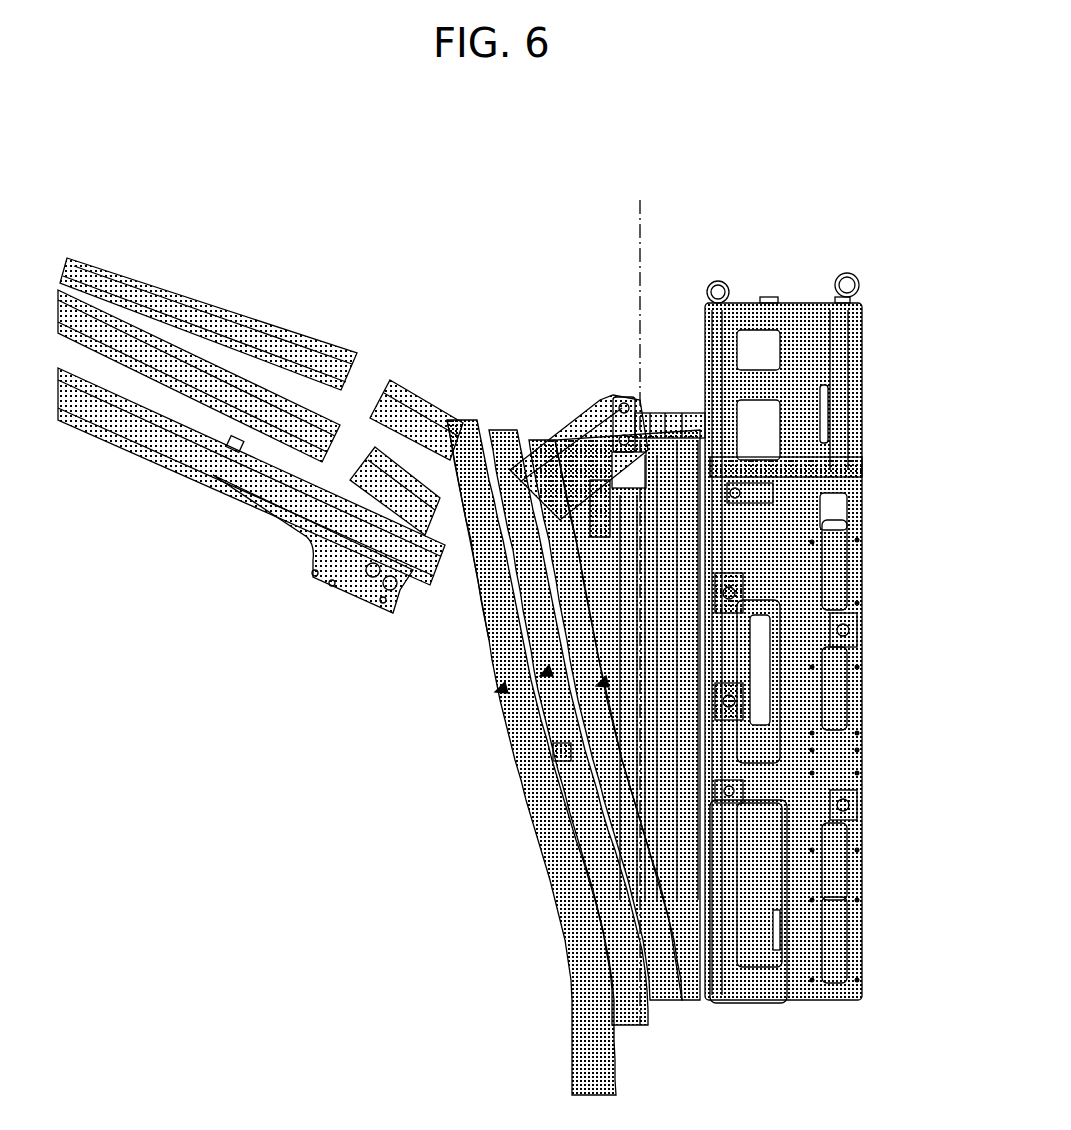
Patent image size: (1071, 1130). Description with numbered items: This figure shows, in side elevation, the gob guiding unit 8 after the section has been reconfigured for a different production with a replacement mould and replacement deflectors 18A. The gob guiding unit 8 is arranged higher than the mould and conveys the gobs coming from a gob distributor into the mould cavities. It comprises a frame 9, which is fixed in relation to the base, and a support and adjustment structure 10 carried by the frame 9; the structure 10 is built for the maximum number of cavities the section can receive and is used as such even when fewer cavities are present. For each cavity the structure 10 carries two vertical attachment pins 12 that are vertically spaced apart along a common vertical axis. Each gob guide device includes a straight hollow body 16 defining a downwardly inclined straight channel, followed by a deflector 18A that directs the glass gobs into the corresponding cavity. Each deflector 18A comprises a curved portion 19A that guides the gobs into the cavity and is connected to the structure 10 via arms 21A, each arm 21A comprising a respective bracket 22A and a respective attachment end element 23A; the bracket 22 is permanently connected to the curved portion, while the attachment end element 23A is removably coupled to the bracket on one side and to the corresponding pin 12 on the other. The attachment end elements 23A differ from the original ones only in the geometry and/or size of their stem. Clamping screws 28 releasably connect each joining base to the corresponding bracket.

The gob guiding unit 8 is at (507, 623).
The frame 9 is at (863, 355).
The support and adjustment structure 10 is at (694, 316).
The vertical attachment pin 12 is at (735, 458).
The straight hollow body 16 is at (175, 272).
The deflector 18A is at (500, 705).
The curved portion 19A is at (548, 820).
The arm 21A is at (564, 418).
The bracket 22 is at (470, 630).
The bracket 22A is at (518, 462).
The attachment end element 23A is at (655, 410).
The clamping screw 28 is at (590, 430).